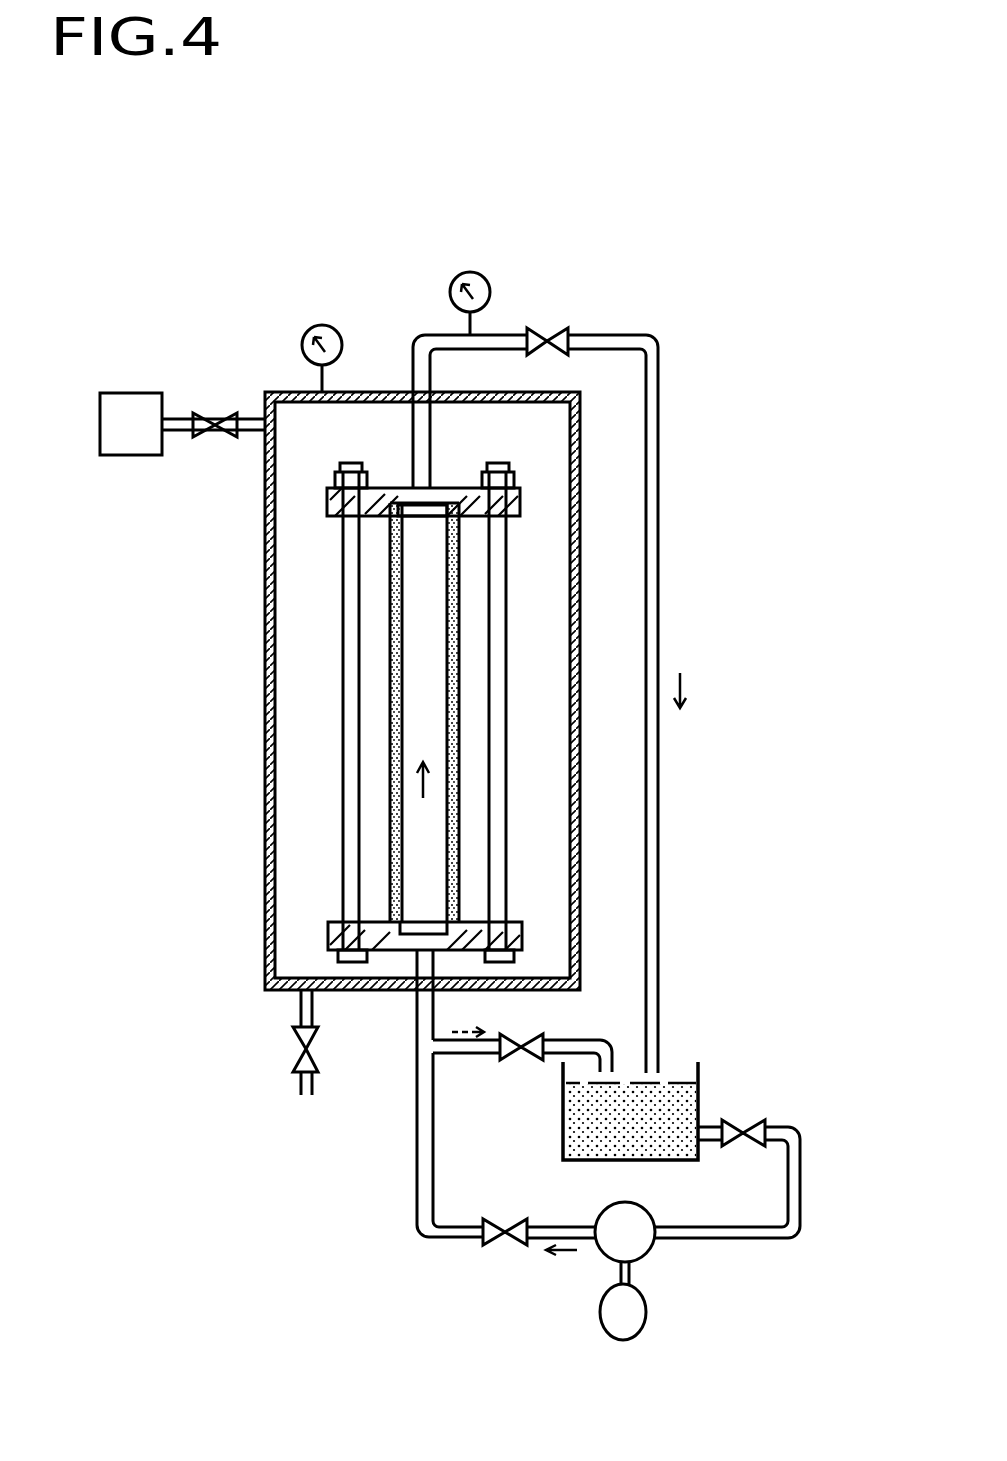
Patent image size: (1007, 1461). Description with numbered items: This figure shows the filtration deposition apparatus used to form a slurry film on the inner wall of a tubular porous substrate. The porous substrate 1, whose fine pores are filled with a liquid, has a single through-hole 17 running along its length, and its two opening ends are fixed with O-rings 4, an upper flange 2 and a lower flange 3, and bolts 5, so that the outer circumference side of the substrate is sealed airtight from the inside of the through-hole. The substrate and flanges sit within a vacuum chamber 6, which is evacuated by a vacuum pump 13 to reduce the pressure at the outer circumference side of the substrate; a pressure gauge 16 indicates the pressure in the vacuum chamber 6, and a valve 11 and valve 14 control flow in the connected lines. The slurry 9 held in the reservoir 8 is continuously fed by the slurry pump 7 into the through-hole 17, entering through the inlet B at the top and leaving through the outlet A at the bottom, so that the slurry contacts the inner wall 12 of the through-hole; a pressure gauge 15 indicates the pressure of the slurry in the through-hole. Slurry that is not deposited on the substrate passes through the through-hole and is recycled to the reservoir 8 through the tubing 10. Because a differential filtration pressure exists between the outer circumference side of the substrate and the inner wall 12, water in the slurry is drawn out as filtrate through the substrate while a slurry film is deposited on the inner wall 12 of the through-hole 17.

The porous substrate 1 is at (390, 687).
The flange 2 is at (402, 488).
The flange 3 is at (328, 932).
The O-rings 4 is at (450, 488).
The bolts 5 is at (503, 687).
The vacuum chamber 6 is at (583, 725).
The slurry pump 7 is at (652, 1253).
The reservoir 8 is at (700, 1100).
The slurry 9 is at (670, 1100).
The tubing 10 is at (645, 336).
The valve 11 is at (560, 330).
The inner wall 12 is at (397, 636).
The vacuum pump 13 is at (150, 455).
The valve 14 is at (532, 1058).
The pressure gauge 15 is at (473, 268).
The pressure gauge 16 is at (310, 327).
The through-hole 17 is at (427, 647).
The outlet A is at (420, 958).
The inlet B is at (423, 490).